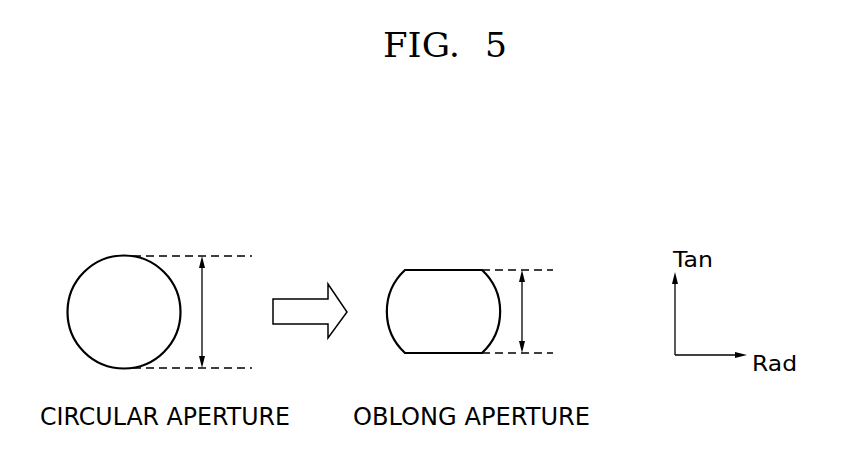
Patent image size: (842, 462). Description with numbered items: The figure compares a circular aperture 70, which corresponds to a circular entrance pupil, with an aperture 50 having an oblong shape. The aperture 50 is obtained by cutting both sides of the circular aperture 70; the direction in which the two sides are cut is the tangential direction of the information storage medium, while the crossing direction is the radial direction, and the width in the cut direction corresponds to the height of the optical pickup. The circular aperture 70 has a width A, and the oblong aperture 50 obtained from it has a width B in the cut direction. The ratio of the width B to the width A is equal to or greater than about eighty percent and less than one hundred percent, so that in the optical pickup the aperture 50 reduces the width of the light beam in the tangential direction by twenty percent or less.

The circular aperture 70 is at (95, 262).
The aperture 50 is at (403, 270).
The width of the circular aperture A is at (192, 312).
The width of the aperture having an oblong shape B is at (517, 311).